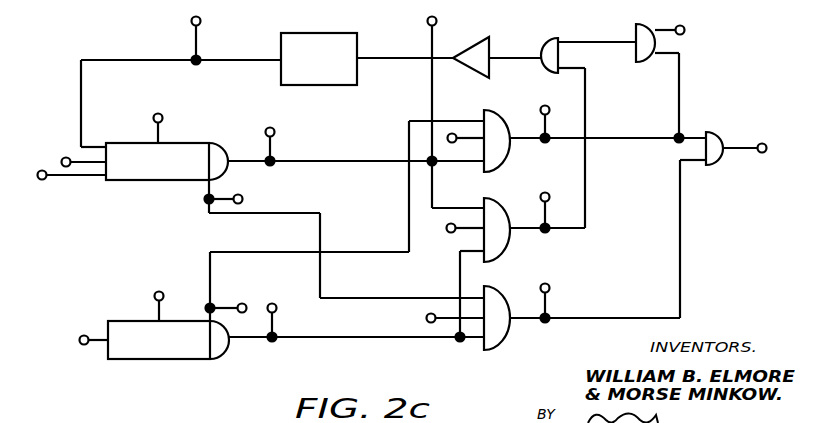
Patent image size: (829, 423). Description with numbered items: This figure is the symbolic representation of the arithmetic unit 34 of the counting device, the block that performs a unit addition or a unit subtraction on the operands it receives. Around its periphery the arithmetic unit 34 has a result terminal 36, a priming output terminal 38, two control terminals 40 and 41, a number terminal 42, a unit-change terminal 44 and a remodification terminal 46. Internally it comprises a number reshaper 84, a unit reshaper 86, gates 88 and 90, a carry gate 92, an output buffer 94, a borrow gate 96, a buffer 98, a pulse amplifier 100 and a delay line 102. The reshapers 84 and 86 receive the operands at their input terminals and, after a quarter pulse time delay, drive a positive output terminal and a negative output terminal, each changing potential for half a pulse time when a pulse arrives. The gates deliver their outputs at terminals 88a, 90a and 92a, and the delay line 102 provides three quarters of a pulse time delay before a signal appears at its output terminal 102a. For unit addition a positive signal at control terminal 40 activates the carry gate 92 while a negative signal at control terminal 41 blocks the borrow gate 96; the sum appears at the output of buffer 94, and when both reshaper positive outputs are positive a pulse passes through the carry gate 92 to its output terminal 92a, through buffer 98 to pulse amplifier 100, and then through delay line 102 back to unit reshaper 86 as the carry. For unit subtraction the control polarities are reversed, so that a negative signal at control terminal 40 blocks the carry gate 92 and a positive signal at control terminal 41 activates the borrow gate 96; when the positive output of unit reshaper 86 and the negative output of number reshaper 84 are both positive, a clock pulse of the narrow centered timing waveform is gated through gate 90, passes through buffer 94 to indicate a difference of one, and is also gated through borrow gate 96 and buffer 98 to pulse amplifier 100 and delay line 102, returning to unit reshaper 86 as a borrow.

The arithmetic unit 34 is at (497, 387).
The result terminal 36 is at (767, 148).
The priming output terminal 38 is at (437, 21).
The control terminal 40 is at (446, 228).
The control terminal 41 is at (685, 30).
The number terminal 42 is at (80, 340).
The unit-change terminal 44 is at (40, 180).
The remodification terminal 46 is at (63, 160).
The number reshaper 84 is at (286, 312).
The unit reshaper 86 is at (282, 124).
The gate 88 is at (497, 300).
The output terminal of gate 88 88a is at (549, 284).
The gate 90 is at (497, 123).
The output terminal of gate 90 90a is at (549, 107).
The carry gate 92 is at (497, 213).
The output terminal of carry gate 92a is at (557, 186).
The output buffer 94 is at (714, 131).
The borrow gate 96 is at (636, 28).
The buffer 98 is at (543, 40).
The pulse amplifier 100 is at (484, 40).
The delay line 102 is at (336, 80).
The output terminal of delay line 102a is at (201, 19).